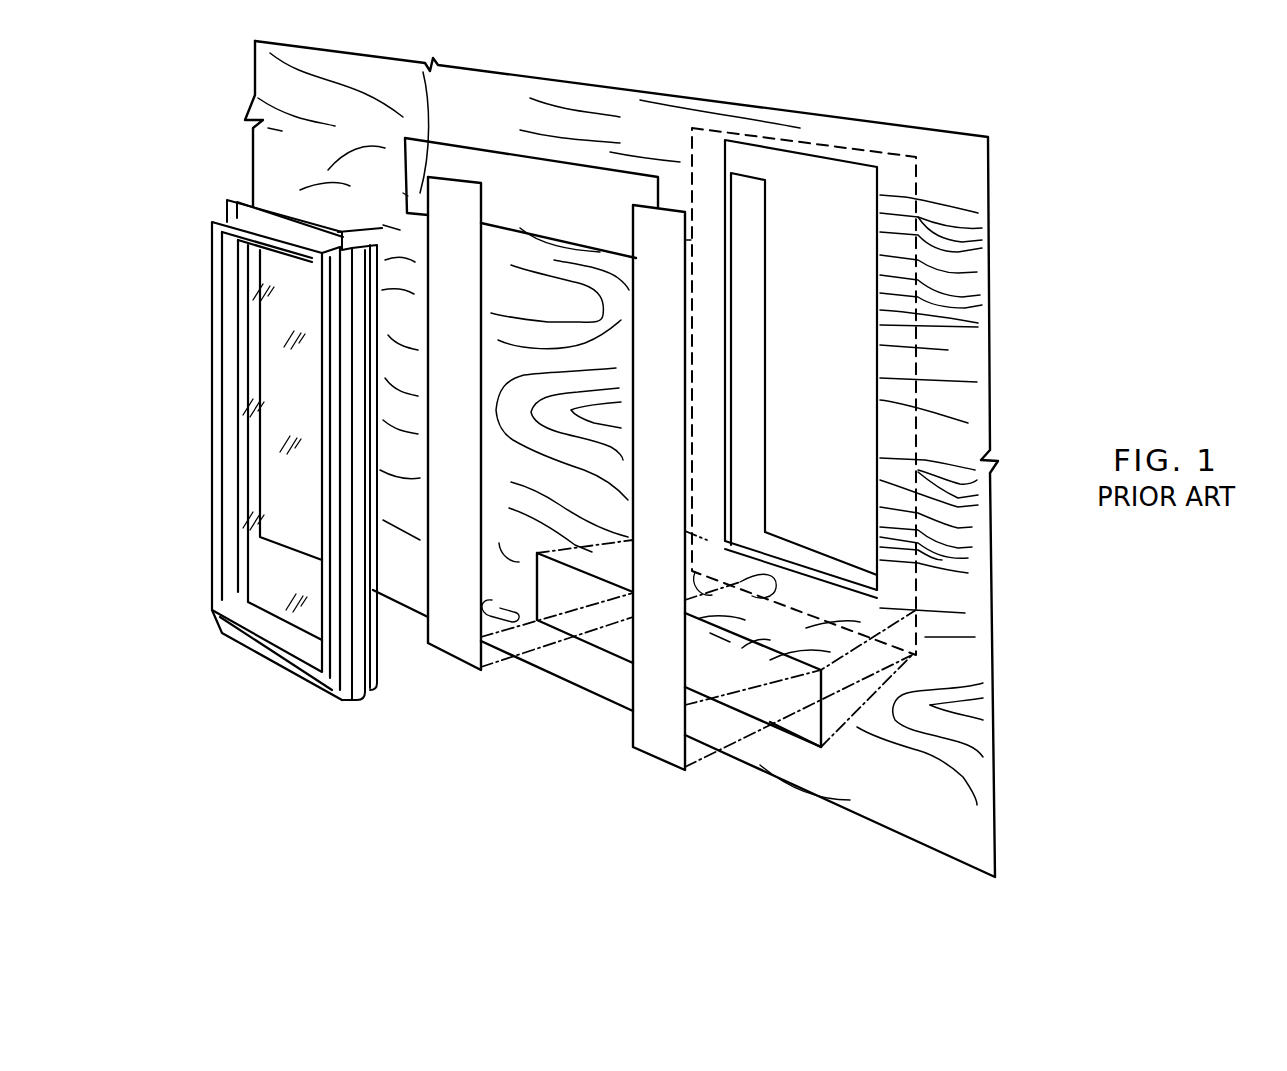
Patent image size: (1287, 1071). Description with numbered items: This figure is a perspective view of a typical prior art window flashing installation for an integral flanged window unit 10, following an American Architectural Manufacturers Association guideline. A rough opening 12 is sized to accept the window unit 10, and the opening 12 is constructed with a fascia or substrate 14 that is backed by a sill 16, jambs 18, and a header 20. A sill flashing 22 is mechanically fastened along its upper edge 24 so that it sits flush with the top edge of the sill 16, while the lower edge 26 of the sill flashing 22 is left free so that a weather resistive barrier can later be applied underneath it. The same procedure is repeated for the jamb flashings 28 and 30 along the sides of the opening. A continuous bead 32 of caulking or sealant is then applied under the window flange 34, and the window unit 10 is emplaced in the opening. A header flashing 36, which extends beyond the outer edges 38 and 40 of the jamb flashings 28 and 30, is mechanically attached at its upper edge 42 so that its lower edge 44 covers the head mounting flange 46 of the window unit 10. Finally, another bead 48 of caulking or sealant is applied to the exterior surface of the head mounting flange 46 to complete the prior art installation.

The window unit 10 is at (229, 648).
The rough opening 12 is at (840, 212).
The fascia or substrate 14 is at (954, 450).
The sill 16 is at (808, 558).
The jambs 18 is at (877, 303).
The header 20 is at (800, 185).
The sill flashing 22 is at (572, 622).
The upper edge 24 is at (608, 577).
The lower edge 26 is at (807, 750).
The jamb flashing 28 is at (457, 197).
The jamb flashing 30 is at (650, 220).
The continuous bead 32 is at (367, 630).
The window flange 34 is at (338, 232).
The header flashing 36 is at (503, 167).
The outer edge 38 is at (423, 72).
The outer edge 40 is at (690, 250).
The upper edge 42 is at (403, 193).
The lower edge 44 is at (529, 236).
The head mounting flange 46 is at (307, 230).
The bead 48 is at (277, 232).